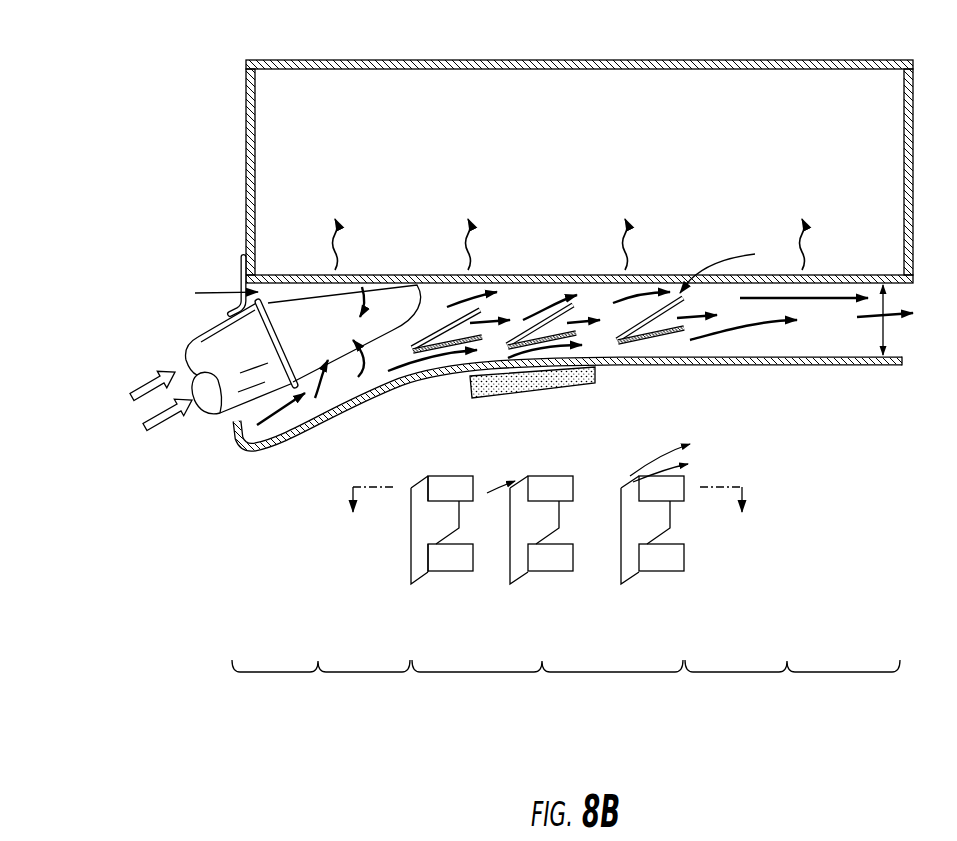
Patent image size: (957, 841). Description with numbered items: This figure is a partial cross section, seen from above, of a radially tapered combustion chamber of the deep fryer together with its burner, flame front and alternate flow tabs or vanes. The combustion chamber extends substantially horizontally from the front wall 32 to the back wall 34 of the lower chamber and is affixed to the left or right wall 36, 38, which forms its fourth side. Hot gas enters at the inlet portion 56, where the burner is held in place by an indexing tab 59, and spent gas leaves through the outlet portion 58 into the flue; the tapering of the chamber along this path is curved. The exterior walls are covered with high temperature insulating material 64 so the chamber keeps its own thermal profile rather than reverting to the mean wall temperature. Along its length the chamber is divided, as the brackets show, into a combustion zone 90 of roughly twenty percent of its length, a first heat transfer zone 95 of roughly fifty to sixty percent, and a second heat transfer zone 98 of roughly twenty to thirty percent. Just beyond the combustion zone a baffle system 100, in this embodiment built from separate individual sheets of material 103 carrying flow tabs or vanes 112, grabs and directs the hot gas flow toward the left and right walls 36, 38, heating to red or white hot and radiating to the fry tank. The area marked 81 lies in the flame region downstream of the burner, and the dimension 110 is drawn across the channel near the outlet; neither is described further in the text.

The front wall 32 is at (255, 196).
The back wall 34 is at (913, 180).
The left wall 36 is at (592, 60).
The right wall 38 is at (545, 275).
The inlet portion 56 is at (241, 280).
The outlet portion 58 is at (900, 342).
The indexing tab 59 is at (213, 295).
The insulating material 64 is at (567, 385).
The mixing region 81 is at (326, 342).
The combustion zone 90 is at (321, 684).
The first heat transfer zone 95 is at (547, 684).
The second heat transfer zone 98 is at (792, 684).
The baffle system 100 is at (736, 267).
The separate individual sheets of material 103 is at (540, 336).
The channel height 110 is at (865, 320).
The flow tabs or vanes 112 is at (450, 323).